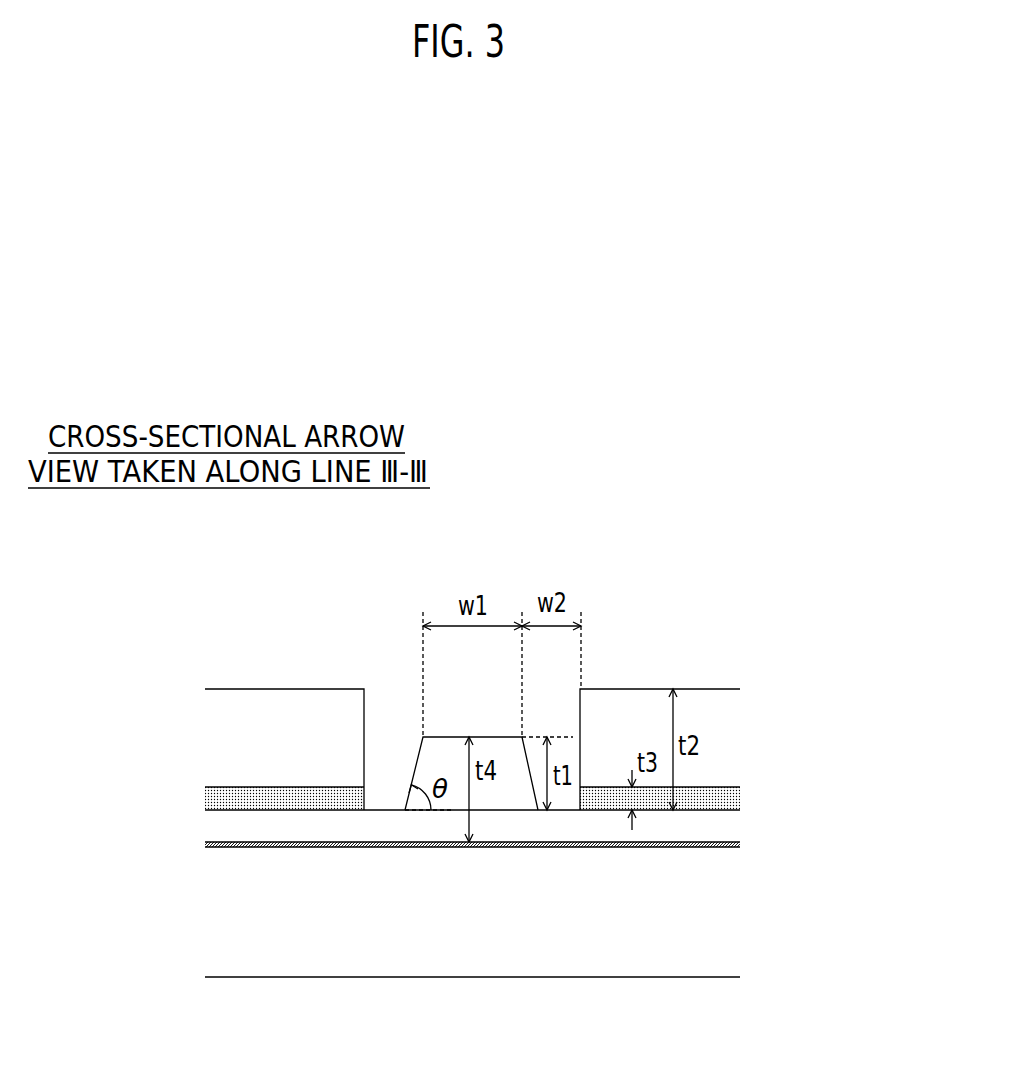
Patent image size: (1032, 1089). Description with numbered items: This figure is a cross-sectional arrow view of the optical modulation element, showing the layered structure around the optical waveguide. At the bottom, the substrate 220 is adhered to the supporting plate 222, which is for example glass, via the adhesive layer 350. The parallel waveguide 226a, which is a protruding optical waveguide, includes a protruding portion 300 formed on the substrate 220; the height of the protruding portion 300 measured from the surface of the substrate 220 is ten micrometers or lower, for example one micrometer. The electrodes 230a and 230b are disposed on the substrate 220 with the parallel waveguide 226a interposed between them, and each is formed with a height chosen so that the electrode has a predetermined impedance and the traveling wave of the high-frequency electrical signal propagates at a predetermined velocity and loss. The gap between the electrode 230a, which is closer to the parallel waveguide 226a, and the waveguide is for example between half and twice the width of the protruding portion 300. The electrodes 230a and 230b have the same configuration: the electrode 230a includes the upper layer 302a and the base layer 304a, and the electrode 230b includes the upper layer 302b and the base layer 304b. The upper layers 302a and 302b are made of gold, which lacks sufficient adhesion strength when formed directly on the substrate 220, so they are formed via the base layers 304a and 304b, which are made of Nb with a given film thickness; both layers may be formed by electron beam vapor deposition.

The electrode 230b is at (108, 690).
The upper layer 302b is at (212, 731).
The base layer 304b is at (212, 797).
The substrate 220 is at (218, 825).
The adhesive layer 350 is at (227, 847).
The supporting plate 222 is at (287, 965).
The parallel waveguide 226a is at (502, 790).
The protruding portion 300 is at (453, 737).
The upper layer 302a is at (732, 731).
The base layer 304a is at (732, 797).
The electrode 230a is at (838, 692).